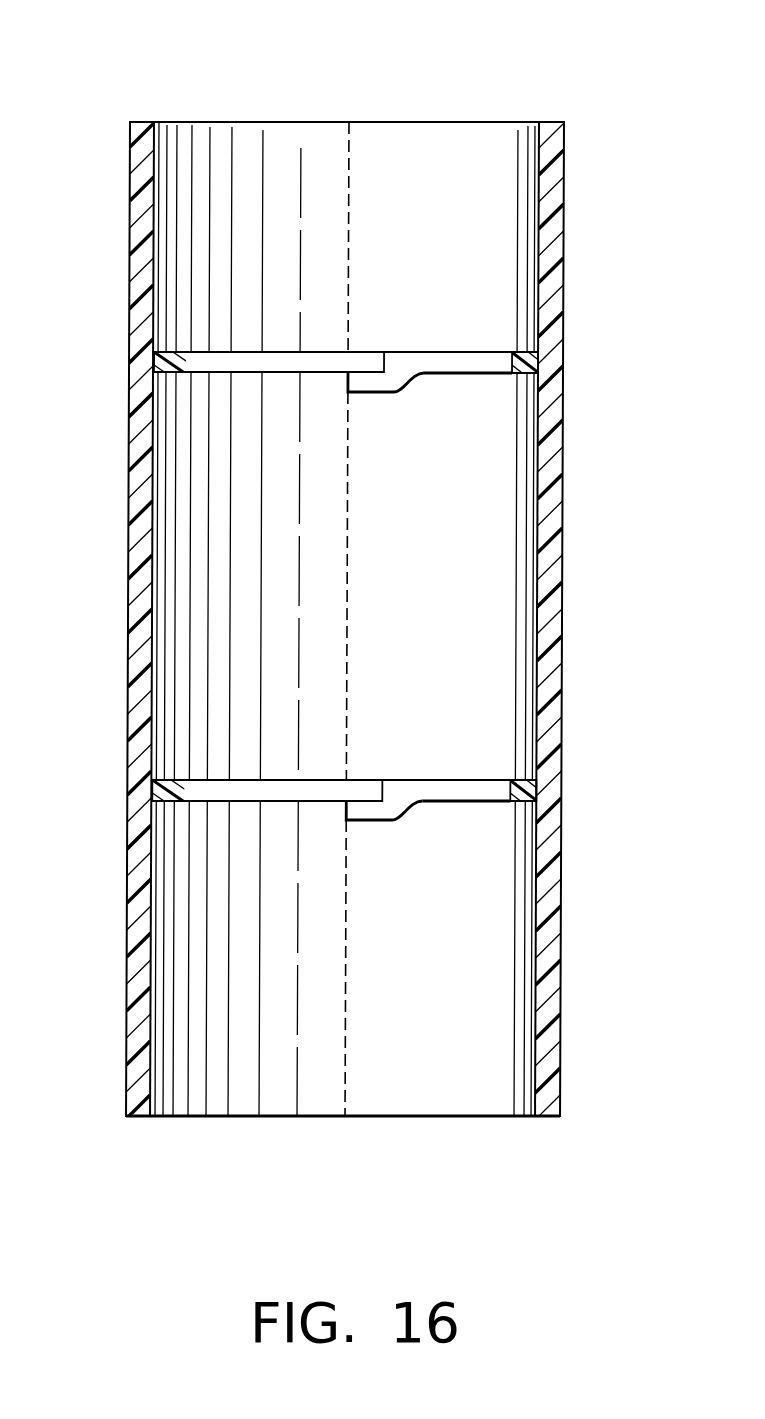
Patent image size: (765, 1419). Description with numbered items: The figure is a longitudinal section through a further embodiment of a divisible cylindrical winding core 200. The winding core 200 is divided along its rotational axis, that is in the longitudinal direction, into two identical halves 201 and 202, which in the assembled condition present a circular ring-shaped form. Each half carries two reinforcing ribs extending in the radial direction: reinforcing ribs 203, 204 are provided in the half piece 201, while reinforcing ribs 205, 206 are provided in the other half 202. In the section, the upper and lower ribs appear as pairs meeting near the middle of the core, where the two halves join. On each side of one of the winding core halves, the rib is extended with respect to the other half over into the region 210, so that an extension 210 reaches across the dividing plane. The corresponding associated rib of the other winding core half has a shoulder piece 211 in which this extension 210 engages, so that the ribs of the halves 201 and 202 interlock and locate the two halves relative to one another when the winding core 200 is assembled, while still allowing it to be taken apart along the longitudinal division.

The winding core 200 is at (328, 78).
The winding core half 201 is at (247, 1100).
The winding core half 202 is at (399, 1103).
The reinforcing rib 203 is at (207, 350).
The reinforcing rib 204 is at (217, 778).
The reinforcing rib 205 is at (482, 350).
The reinforcing rib 206 is at (475, 778).
The extension 210 is at (355, 350).
The shoulder piece 211 is at (370, 393).